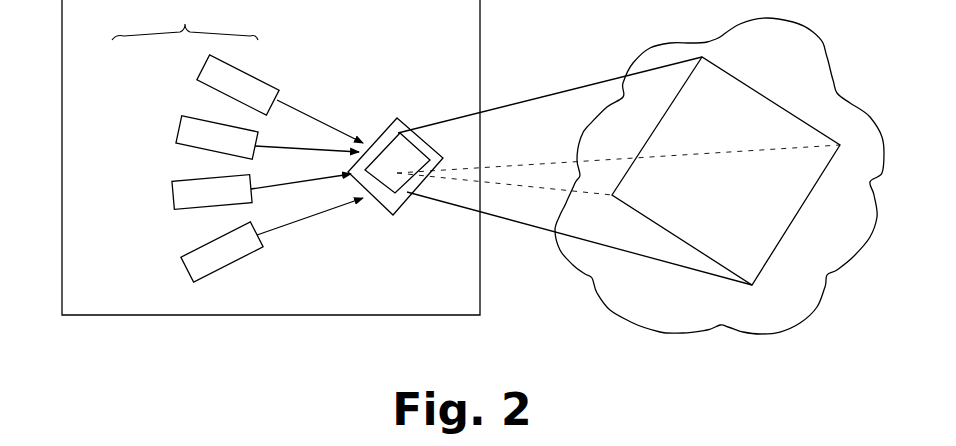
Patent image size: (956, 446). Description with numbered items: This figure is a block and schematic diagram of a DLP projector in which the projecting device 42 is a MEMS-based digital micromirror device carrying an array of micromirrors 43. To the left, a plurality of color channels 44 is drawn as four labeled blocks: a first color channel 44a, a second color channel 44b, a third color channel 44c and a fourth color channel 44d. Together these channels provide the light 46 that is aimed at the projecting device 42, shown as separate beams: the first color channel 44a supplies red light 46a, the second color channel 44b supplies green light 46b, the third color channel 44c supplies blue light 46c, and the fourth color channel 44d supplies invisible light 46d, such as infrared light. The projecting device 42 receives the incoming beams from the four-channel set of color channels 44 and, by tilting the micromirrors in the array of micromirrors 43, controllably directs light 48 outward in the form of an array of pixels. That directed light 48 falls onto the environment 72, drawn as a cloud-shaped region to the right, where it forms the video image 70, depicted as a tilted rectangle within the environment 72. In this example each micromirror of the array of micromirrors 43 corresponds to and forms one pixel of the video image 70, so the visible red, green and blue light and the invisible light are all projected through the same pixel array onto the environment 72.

The projecting device 42 is at (385, 210).
The array of micromirrors 43 is at (408, 192).
The plurality of color channels 44 is at (185, 20).
The first color channel 44a is at (198, 72).
The second color channel 44b is at (178, 128).
The third color channel 44c is at (172, 196).
The fourth color channel 44d is at (188, 272).
The light 46 is at (337, 66).
The red light 46a is at (320, 119).
The green light 46b is at (298, 149).
The blue light 46c is at (280, 184).
The invisible light 46d is at (276, 220).
The light 48 is at (521, 103).
The video image 70 is at (713, 87).
The environment 72 is at (780, 330).